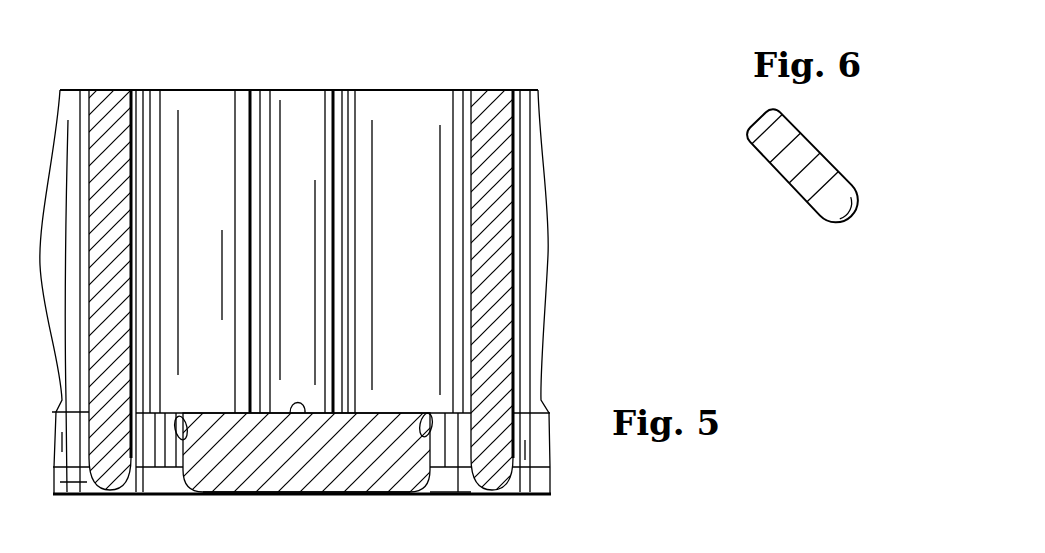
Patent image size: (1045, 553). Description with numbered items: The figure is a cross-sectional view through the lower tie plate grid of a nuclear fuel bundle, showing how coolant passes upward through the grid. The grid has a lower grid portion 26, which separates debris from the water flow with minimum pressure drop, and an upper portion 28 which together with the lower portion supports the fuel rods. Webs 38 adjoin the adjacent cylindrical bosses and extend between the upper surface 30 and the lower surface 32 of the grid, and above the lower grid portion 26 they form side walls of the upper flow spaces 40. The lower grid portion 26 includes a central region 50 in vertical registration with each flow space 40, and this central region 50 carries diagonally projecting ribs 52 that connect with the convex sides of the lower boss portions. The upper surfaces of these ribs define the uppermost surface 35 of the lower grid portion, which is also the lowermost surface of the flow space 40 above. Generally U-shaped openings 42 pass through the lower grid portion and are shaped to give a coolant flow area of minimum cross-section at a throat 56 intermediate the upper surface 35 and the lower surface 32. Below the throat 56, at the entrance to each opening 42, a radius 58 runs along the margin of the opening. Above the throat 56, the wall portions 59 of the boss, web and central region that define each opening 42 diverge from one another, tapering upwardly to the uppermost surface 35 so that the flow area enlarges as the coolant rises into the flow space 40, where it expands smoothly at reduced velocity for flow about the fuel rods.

In FIG. 5, the lower grid portion 26 is at (350, 475).
In FIG. 5, the upper portion 28 is at (491, 115).
In FIG. 5, the upper surface 30 is at (203, 90).
In FIG. 5, the lower surface 32 is at (199, 495).
In FIG. 5, the upper surface 35 is at (305, 413).
In FIG. 5, the webs 38 is at (303, 112).
In FIG. 5, the flow spaces 40 is at (316, 303).
In FIG. 5, the openings 42 is at (445, 455).
In FIG. 5, the central region 50 is at (246, 478).
In FIG. 6, the diagonally projecting ribs 52 is at (786, 186).
In FIG. 5, the throat 56 is at (160, 495).
In FIG. 5, the radius 58 is at (432, 492).
In FIG. 6, the radius 58 is at (851, 241).
In FIG. 6, the wall portions 59 is at (748, 151).